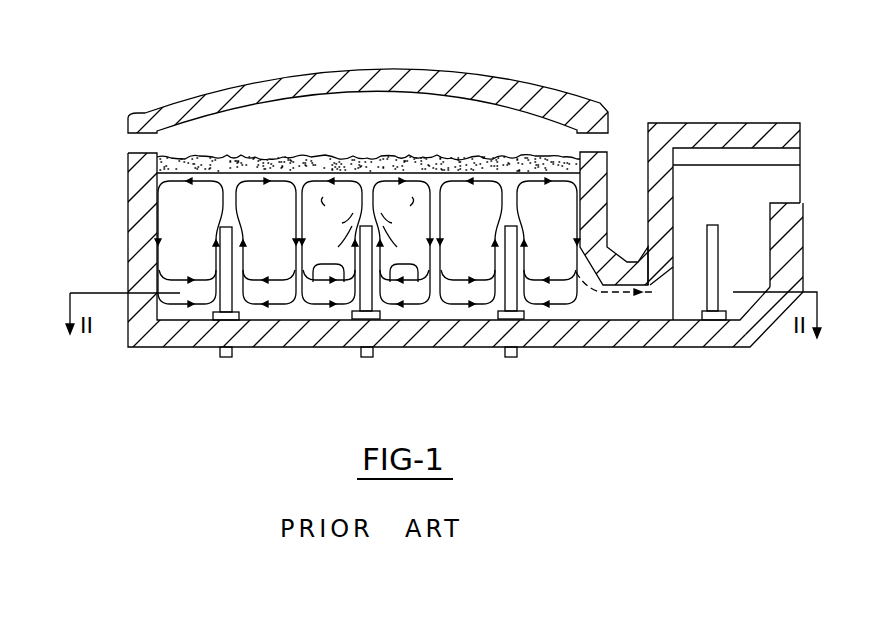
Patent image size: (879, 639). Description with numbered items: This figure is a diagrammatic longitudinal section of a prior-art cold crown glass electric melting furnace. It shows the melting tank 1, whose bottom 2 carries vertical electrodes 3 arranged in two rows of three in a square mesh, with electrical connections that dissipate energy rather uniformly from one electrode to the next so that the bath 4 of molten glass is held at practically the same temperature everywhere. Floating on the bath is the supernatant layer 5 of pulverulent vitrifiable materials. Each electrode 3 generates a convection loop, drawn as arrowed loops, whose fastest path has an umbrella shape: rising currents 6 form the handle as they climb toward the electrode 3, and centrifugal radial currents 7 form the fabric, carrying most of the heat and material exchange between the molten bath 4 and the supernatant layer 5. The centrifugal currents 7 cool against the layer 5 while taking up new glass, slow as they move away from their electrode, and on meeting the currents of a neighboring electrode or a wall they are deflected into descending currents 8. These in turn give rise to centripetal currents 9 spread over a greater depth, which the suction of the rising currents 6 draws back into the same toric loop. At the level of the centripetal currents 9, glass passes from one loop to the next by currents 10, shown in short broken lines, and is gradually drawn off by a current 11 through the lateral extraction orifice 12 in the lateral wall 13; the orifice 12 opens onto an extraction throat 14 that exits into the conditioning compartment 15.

The melting tank 1 is at (341, 52).
The bottom 2 is at (167, 347).
The vertical electrode 3 is at (223, 255).
The bath of molten glass 4 is at (182, 217).
The supernatant layer 5 is at (170, 172).
The rising currents 6 is at (366, 223).
The centrifugal radial currents 7 is at (367, 200).
The descending currents 8 is at (366, 240).
The centripetal currents 9 is at (365, 269).
The currents 10 is at (291, 300).
The current 11 is at (601, 300).
The lateral extraction orifice 12 is at (580, 303).
The lateral wall 13 is at (592, 203).
The extraction throat 14 is at (633, 306).
The conditioning compartment 15 is at (742, 86).